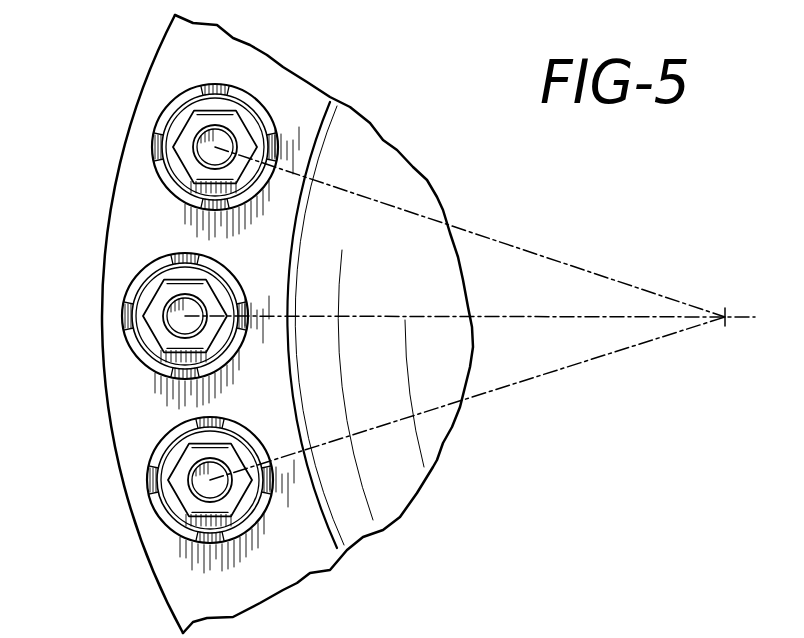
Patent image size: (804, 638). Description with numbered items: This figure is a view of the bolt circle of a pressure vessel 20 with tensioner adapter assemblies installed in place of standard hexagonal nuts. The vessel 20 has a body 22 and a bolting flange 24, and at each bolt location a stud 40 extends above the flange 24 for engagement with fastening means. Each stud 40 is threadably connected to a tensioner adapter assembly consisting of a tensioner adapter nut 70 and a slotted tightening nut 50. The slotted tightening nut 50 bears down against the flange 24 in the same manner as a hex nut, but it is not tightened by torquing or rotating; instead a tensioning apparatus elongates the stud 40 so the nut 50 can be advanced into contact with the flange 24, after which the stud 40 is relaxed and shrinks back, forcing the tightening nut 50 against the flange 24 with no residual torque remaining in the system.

The pressure vessel 20 is at (404, 148).
The body 22 is at (413, 191).
The bolting flange 24 is at (260, 63).
The stud 40 is at (207, 143).
The slotted tightening nut 50 is at (160, 106).
The tensioner adapter nut 70 is at (160, 153).